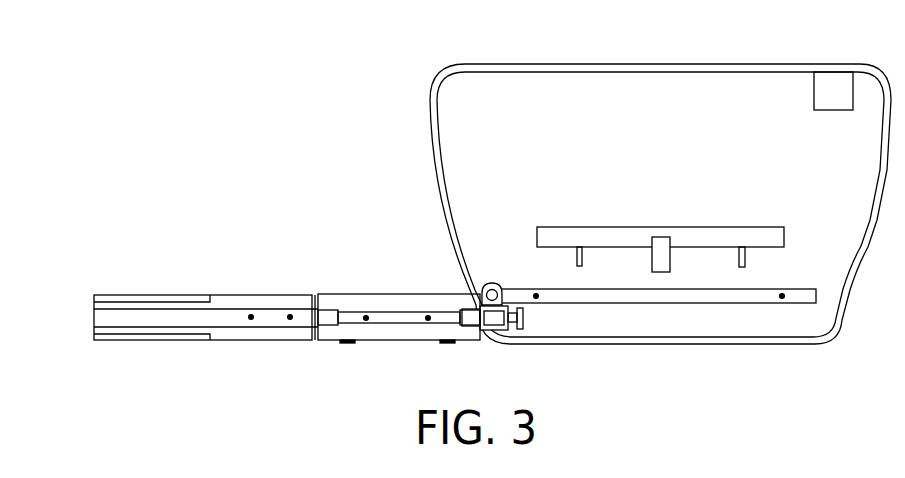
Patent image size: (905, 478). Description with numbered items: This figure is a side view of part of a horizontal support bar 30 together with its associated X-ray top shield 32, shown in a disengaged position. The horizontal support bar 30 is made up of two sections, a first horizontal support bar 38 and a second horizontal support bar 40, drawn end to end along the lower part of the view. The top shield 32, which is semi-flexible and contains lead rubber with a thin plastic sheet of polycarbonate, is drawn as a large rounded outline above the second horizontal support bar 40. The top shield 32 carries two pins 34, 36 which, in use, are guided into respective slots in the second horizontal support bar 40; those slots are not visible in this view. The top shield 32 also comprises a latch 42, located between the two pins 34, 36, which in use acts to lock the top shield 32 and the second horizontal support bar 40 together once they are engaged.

The horizontal support bar 30 is at (248, 292).
The X-ray top shield 32 is at (728, 86).
The pin 34 is at (580, 266).
The pin 36 is at (742, 267).
The first horizontal support bar 38 is at (393, 333).
The second horizontal support bar 40 is at (632, 298).
The latch 42 is at (661, 245).